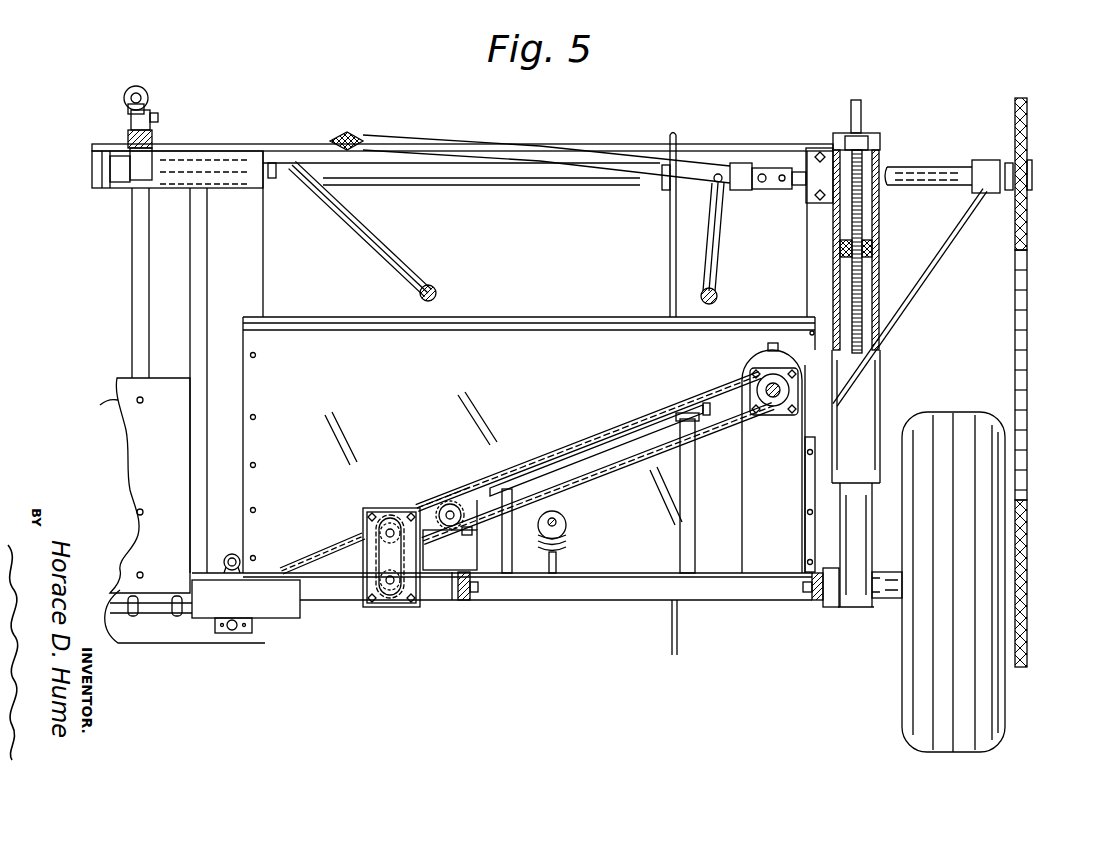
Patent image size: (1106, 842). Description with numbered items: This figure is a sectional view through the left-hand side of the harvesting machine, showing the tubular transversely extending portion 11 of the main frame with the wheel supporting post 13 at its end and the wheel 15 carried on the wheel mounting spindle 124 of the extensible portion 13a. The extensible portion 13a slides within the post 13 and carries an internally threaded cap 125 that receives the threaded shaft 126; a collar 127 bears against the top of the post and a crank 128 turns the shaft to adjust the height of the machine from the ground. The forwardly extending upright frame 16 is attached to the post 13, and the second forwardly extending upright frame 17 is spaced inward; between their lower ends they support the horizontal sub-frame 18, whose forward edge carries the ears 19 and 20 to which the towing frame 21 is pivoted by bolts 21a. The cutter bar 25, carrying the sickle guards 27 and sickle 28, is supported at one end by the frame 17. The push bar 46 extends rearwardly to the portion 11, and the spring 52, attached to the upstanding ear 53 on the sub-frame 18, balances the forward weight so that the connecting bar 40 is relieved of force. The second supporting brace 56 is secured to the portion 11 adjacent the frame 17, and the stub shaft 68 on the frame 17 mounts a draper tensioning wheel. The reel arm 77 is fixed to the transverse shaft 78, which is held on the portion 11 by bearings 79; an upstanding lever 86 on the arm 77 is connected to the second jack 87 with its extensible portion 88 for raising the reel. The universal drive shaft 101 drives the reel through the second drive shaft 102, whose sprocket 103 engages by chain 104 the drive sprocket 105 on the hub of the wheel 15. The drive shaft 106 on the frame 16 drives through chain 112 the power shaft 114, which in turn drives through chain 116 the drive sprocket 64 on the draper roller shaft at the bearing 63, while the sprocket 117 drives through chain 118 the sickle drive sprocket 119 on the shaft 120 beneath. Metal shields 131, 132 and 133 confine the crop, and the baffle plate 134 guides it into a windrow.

The tubular transversely extending portion 11 is at (256, 150).
The wheel supporting post 13 is at (876, 404).
The extensible portion 13a is at (805, 530).
The wheel 15 is at (1006, 702).
The forwardly extending upright frame 16 is at (806, 256).
The second forwardly extending upright frame 17 is at (190, 260).
The horizontal sub-frame 18 is at (586, 600).
The ear 19 is at (460, 603).
The ear 20 is at (830, 608).
The towing frame 21 is at (814, 602).
The bolts 21a is at (479, 586).
The cutter bar 25 is at (118, 598).
The sickle guards 27 is at (116, 640).
The sickle 28 is at (158, 612).
The connecting bar 40 is at (722, 226).
The push bar 46 is at (384, 252).
The spring 52 is at (568, 527).
The upstanding ear 53 is at (558, 564).
The second supporting brace 56 is at (131, 274).
The bearing 63 is at (468, 552).
The drive sprocket 64 is at (452, 500).
The stub shaft 68 is at (238, 553).
The reel arm 77 is at (153, 136).
The transverse shaft 78 is at (122, 150).
The bearings 79 is at (96, 176).
The upstanding lever 86 is at (158, 116).
The second jack 87 is at (144, 90).
The extensible portion 88 is at (124, 102).
The universal drive shaft 101 is at (392, 138).
The second drive shaft 102 is at (932, 170).
The sprocket 103 is at (1030, 120).
The chain 104 is at (1030, 308).
The drive sprocket 105 is at (1028, 588).
The drive shaft 106 is at (752, 376).
The chain 112 is at (614, 428).
The power shaft 114 is at (362, 520).
The chain 116 is at (474, 484).
The sprocket 117 is at (348, 544).
The chain 118 is at (350, 578).
The sickle drive sprocket 119 is at (382, 598).
The shaft 120 is at (392, 600).
The wheel mounting spindle 124 is at (886, 600).
The internally threaded cap 125 is at (874, 250).
The threaded shaft 126 is at (863, 216).
The collar 127 is at (882, 147).
The crank 128 is at (866, 108).
The metal shield 131 is at (112, 402).
The metal shield 132 is at (150, 485).
The metal shield 133 is at (529, 445).
The baffle plate 134 is at (668, 262).